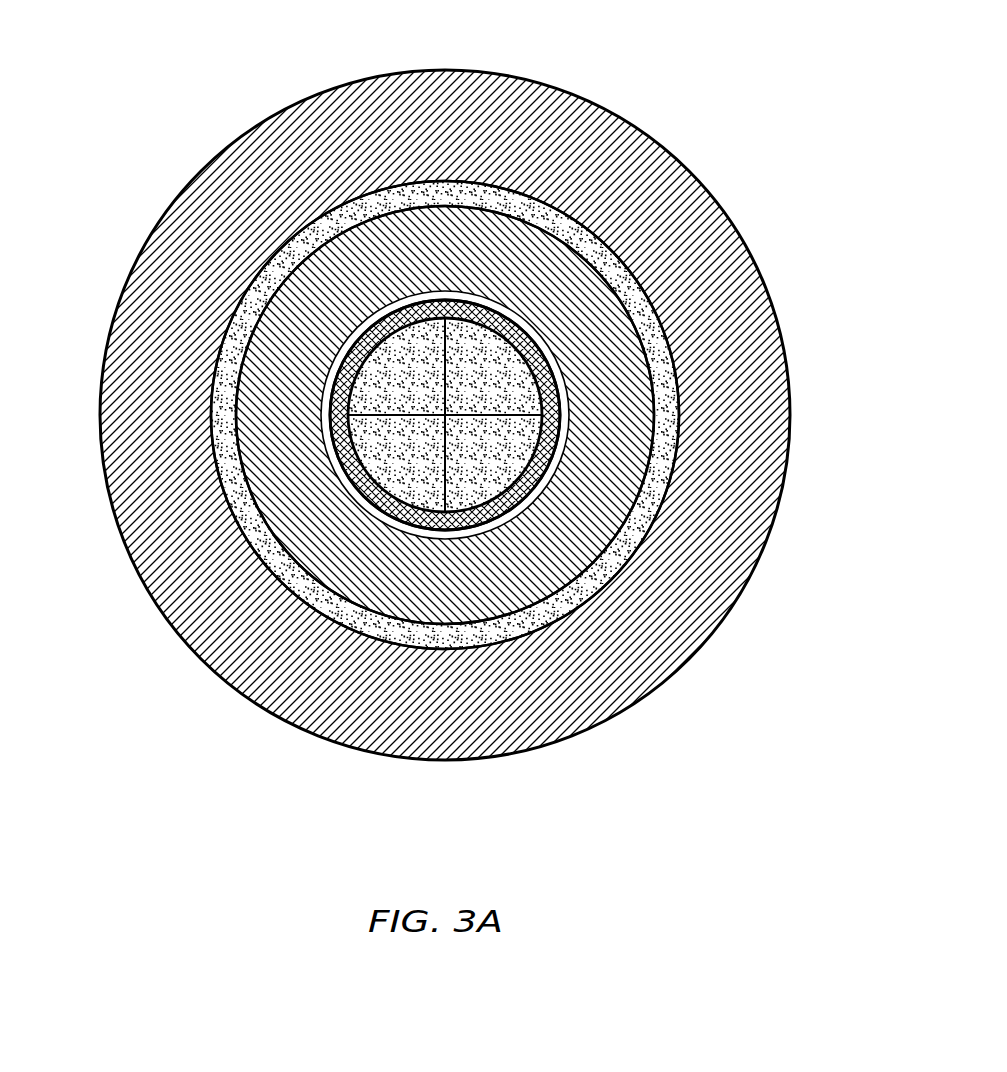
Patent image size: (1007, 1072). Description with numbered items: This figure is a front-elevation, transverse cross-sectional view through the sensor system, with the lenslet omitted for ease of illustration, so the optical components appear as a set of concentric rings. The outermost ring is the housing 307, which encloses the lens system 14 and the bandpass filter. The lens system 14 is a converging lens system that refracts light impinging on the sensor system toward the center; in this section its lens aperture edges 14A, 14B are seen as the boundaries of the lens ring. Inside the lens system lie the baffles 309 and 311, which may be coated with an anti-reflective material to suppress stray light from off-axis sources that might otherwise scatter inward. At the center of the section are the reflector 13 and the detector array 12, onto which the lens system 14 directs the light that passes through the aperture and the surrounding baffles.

The housing 307 is at (208, 168).
The lens system 14 is at (503, 190).
The lens aperture edge 14A is at (660, 317).
The lens aperture edge 14B is at (638, 283).
The baffle 309 is at (247, 380).
The baffle 311 is at (340, 490).
The reflector 13 is at (517, 507).
The detector array 12 is at (550, 458).